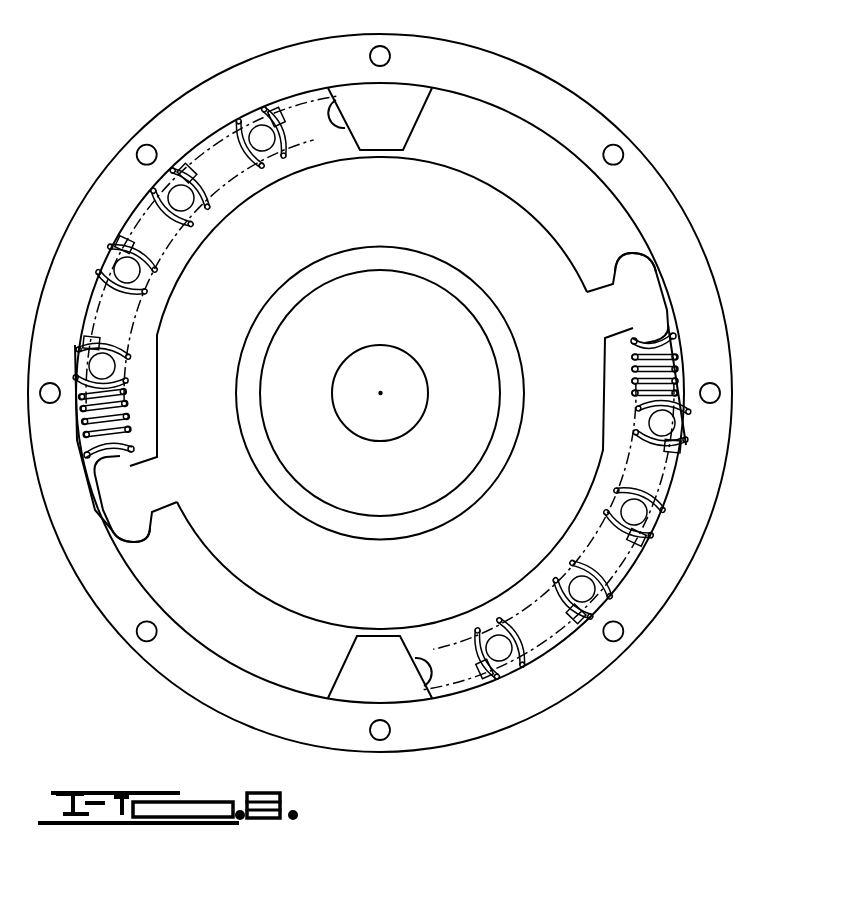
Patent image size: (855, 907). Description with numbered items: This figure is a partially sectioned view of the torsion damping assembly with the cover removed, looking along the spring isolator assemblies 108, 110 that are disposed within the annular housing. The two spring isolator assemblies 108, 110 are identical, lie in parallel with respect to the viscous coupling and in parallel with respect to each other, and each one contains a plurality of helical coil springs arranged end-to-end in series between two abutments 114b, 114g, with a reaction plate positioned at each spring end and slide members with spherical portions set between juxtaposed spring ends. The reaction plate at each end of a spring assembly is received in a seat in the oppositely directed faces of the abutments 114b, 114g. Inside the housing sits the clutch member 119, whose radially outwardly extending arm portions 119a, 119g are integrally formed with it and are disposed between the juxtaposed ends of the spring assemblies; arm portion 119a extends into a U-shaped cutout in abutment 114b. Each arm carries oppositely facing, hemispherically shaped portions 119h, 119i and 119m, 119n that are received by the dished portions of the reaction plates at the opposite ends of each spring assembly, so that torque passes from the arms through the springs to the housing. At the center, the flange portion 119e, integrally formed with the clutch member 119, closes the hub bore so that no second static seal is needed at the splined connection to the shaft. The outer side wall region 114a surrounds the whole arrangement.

The spring isolator assembly 108 is at (630, 580).
The spring isolator assembly 110 is at (205, 137).
The outer flange ring 114a is at (573, 92).
The abutment 114b is at (398, 90).
The abutment 114g is at (368, 693).
The clutch member 119 is at (372, 585).
The arm portion 119a is at (661, 286).
The flange portion 119e is at (376, 430).
The arm portion 119g is at (99, 517).
The hemispherically shaped portion 119h is at (622, 252).
The hemispherically shaped portion 119i is at (640, 363).
The hemispherically shaped portion 119m is at (140, 542).
The hemispherically shaped portion 119n is at (112, 430).